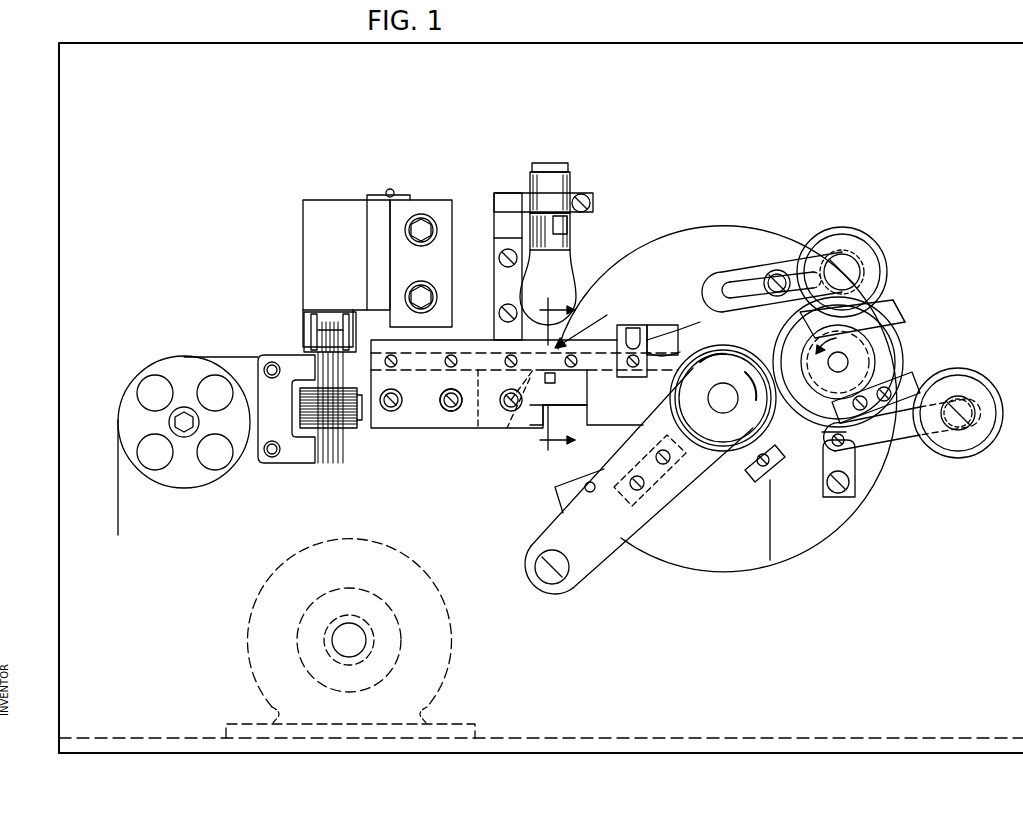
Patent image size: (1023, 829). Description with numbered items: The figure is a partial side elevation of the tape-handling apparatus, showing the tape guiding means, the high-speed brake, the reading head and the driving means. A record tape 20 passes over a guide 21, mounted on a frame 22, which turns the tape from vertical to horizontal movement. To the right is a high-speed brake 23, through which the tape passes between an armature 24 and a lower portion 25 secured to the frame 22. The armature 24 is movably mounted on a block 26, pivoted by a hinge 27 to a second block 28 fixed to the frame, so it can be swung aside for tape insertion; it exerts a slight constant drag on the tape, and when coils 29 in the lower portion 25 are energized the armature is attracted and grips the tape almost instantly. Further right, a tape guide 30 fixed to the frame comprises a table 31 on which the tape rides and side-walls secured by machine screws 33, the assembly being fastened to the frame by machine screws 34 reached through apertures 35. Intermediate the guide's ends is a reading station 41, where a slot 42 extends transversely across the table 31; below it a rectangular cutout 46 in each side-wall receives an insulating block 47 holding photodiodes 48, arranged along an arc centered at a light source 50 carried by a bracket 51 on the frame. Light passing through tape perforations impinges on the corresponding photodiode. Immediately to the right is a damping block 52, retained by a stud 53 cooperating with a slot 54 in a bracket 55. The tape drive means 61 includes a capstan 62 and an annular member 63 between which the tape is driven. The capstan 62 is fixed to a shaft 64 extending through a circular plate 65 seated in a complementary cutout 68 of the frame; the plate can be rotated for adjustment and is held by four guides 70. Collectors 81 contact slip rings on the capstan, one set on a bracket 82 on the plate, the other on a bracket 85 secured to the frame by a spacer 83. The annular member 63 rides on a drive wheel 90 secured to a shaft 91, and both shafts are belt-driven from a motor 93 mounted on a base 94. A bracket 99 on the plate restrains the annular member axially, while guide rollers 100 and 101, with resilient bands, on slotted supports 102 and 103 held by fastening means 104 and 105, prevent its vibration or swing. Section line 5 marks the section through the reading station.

The section line 5 is at (573, 374).
The record tape 20 is at (118, 470).
The guide 21 is at (172, 374).
The frame 22 is at (72, 170).
The high-speed brake 23 is at (291, 336).
The armature 24 is at (312, 328).
The lower portion 25 is at (330, 454).
The block 26 is at (322, 212).
The hinge 27 is at (386, 190).
The second block 28 is at (430, 212).
The coils 29 is at (348, 428).
The tape guide 30 is at (478, 336).
The table 31 is at (480, 408).
The machine screws 33 is at (446, 392).
The machine screws 34 is at (450, 411).
The apertures 35 is at (440, 400).
The reading station 41 is at (607, 315).
The slot 42 is at (532, 430).
The rectangular cutout 46 is at (580, 402).
The block 47 is at (572, 406).
The photodiodes 48 is at (556, 378).
The light source 50 is at (570, 264).
The bracket 51 is at (530, 202).
The damping block 52 is at (658, 326).
The stud 53 is at (633, 332).
The slot 54 is at (676, 348).
The bracket 55 is at (690, 332).
The tape drive means 61 is at (896, 296).
The capstan 62 is at (744, 364).
The annular member 63 is at (888, 366).
The shaft 64 is at (714, 402).
The circular plate 65 is at (720, 558).
The complementary cutout 68 is at (846, 514).
The guides 70 is at (560, 484).
The collectors 81 is at (688, 470).
The bracket 82 is at (754, 484).
The spacer 83 is at (556, 586).
The bracket 85 is at (598, 556).
The drive wheel 90 is at (900, 375).
The shaft 91 is at (846, 362).
The motor 93 is at (452, 644).
The base 94 is at (762, 744).
The bracket 99 is at (852, 474).
The guide roller 100 is at (956, 454).
The guide roller 101 is at (858, 238).
The slotted support 102 is at (884, 440).
The slotted support 103 is at (742, 282).
The fastening means 104 is at (838, 434).
The fastening means 105 is at (777, 270).